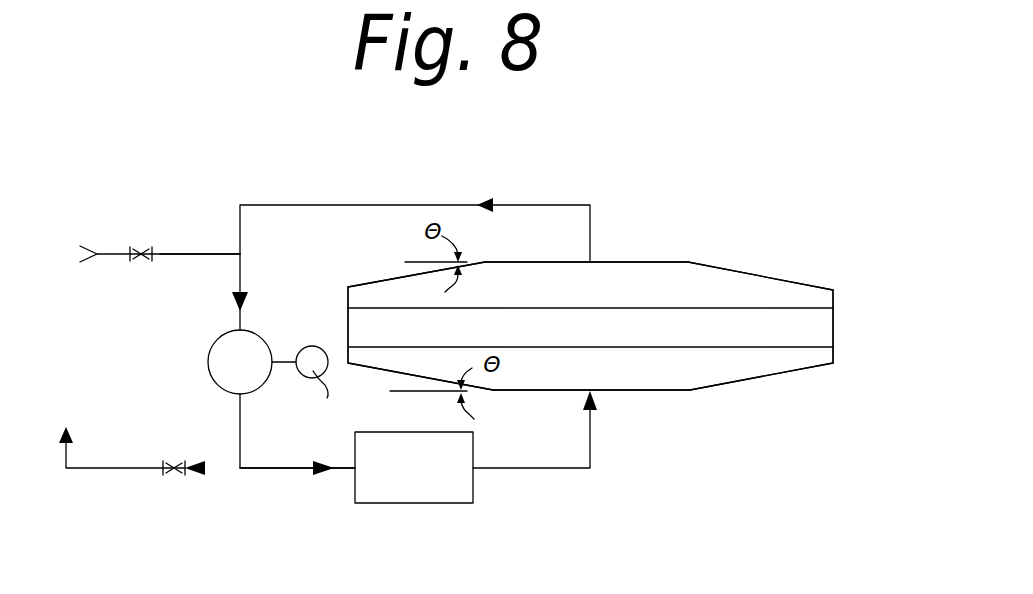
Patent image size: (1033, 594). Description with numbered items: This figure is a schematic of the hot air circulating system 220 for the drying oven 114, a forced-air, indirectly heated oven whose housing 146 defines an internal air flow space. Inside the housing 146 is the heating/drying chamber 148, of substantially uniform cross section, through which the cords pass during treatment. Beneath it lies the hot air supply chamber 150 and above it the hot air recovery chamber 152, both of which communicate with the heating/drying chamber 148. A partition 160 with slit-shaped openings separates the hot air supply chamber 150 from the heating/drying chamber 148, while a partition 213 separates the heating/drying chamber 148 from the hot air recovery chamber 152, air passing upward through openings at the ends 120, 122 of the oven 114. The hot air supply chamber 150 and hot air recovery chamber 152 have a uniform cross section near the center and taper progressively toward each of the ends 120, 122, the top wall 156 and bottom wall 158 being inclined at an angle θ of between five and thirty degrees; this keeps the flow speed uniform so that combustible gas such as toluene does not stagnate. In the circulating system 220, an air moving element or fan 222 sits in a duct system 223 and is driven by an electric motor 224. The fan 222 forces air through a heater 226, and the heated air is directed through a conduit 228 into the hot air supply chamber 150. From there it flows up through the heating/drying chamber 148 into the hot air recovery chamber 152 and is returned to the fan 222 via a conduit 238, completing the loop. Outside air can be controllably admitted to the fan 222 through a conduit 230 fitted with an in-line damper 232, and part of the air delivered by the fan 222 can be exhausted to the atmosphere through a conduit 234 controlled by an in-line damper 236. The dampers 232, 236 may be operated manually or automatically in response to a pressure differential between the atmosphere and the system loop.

The oven 114 is at (760, 247).
The end of the oven 120 is at (842, 287).
The end of the oven 122 is at (358, 279).
The housing 146 is at (790, 280).
The heating/drying chamber 148 is at (714, 338).
The hot air supply chamber 150 is at (660, 380).
The hot air recovery chamber 152 is at (678, 280).
The top wall 156 is at (487, 262).
The bottom wall 158 is at (486, 392).
The partition 160 is at (800, 346).
The partition 213 is at (568, 308).
The hot air circulating system 220 is at (352, 188).
The fan 222 is at (208, 347).
The duct system 223 is at (290, 478).
The electric motor 224 is at (305, 347).
The heater 226 is at (430, 504).
The conduit 228 is at (542, 469).
The conduit 230 is at (197, 254).
The in-line damper 232 is at (127, 252).
The conduit 234 is at (227, 470).
The in-line damper 236 is at (160, 472).
The conduit 238 is at (255, 205).